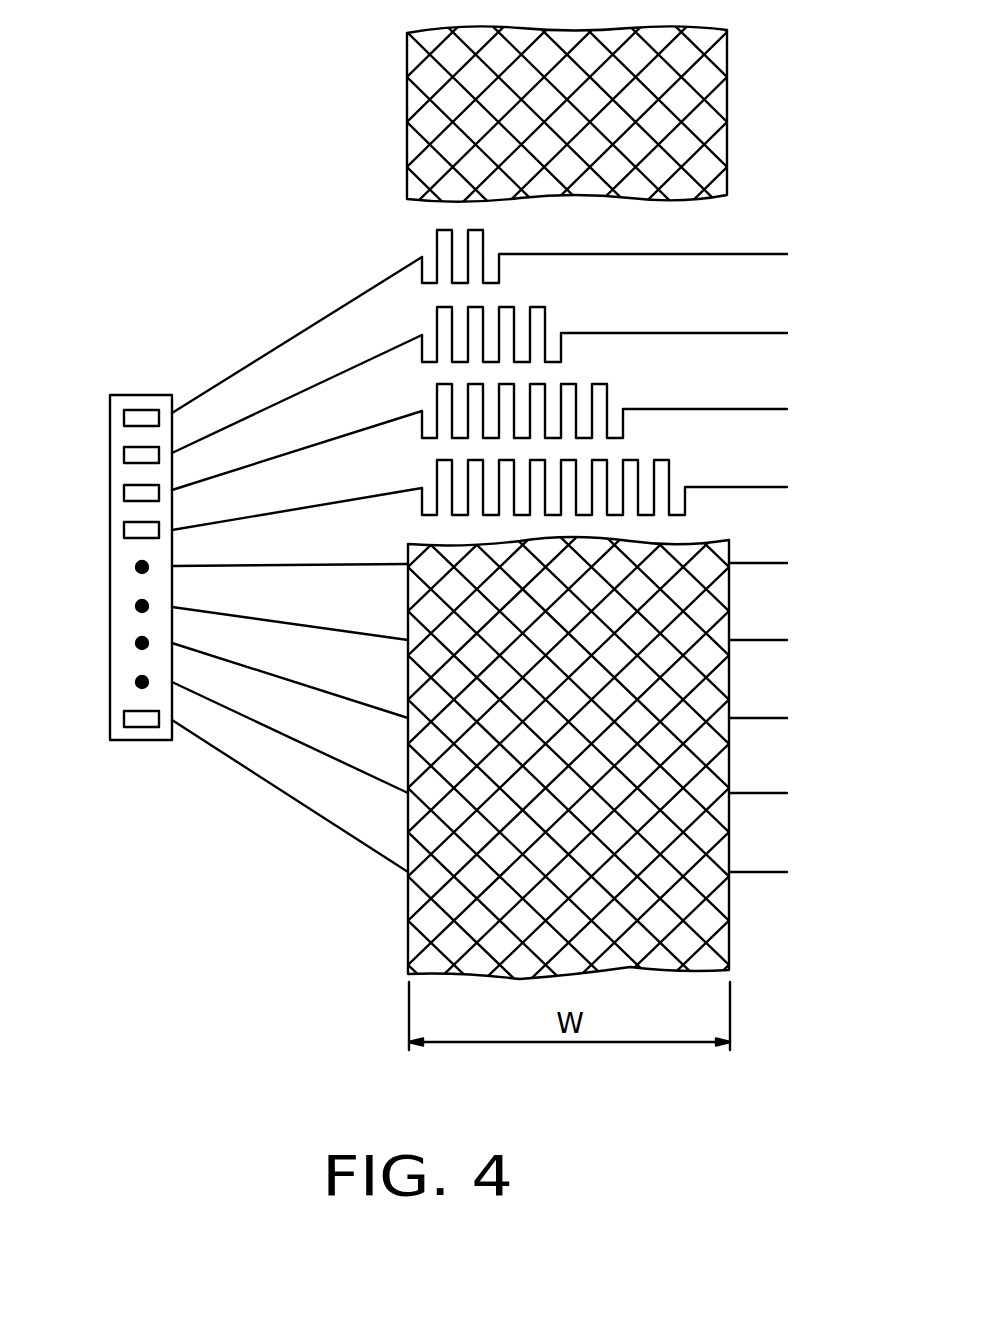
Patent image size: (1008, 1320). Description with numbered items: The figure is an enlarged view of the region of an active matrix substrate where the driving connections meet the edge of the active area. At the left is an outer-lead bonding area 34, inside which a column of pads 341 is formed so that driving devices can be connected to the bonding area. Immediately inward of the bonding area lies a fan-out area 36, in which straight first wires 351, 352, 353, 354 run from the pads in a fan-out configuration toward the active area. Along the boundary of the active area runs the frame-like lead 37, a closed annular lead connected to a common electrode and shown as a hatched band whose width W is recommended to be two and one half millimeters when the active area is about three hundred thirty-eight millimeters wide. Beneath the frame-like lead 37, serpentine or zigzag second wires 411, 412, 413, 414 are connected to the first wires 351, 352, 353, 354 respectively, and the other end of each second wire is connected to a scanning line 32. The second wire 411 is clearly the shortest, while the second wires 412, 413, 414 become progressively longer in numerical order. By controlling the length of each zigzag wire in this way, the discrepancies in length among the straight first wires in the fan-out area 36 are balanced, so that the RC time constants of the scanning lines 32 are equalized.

The scanning line 32 is at (762, 254).
The outer-lead bonding area 34 is at (123, 688).
The pad 341 is at (137, 418).
The first wire 351 is at (287, 340).
The first wire 352 is at (304, 388).
The first wire 353 is at (308, 446).
The first wire 354 is at (293, 508).
The fan-out area 36 is at (296, 531).
The frame-like lead 37 is at (703, 923).
The second wire 411 is at (426, 233).
The second wire 412 is at (551, 293).
The second wire 413 is at (551, 377).
The second wire 414 is at (646, 453).